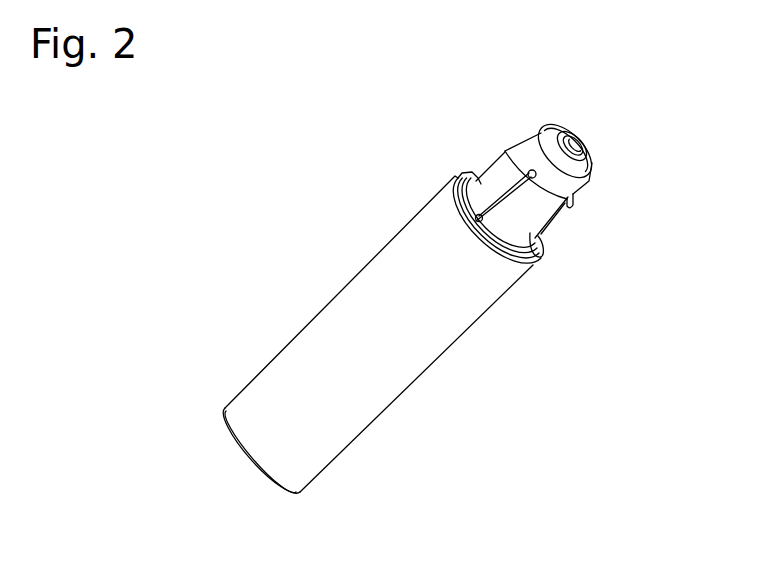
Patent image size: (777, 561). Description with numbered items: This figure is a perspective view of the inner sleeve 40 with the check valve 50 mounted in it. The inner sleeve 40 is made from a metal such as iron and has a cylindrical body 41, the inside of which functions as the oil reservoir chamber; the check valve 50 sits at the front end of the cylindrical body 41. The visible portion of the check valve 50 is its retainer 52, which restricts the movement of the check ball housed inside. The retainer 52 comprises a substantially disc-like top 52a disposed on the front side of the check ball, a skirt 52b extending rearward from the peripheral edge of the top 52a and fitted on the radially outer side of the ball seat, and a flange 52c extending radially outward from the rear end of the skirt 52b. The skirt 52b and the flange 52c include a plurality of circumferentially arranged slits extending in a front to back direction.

The inner sleeve 40 is at (313, 275).
The cylindrical body 41 is at (370, 375).
The check valve 50 is at (505, 130).
The retainer 52 is at (711, 191).
The top 52a is at (592, 162).
The skirt 52b is at (538, 215).
The flange 52c is at (527, 251).